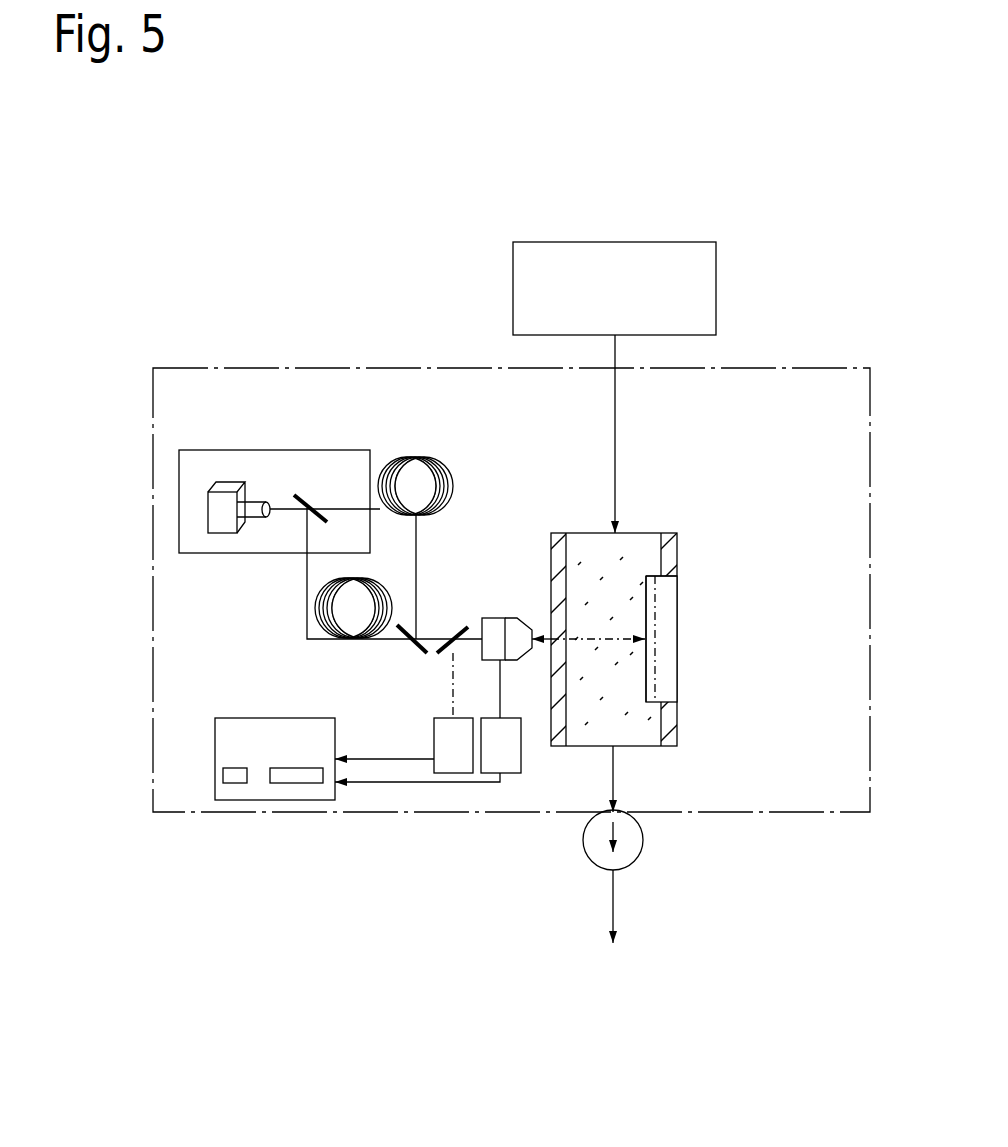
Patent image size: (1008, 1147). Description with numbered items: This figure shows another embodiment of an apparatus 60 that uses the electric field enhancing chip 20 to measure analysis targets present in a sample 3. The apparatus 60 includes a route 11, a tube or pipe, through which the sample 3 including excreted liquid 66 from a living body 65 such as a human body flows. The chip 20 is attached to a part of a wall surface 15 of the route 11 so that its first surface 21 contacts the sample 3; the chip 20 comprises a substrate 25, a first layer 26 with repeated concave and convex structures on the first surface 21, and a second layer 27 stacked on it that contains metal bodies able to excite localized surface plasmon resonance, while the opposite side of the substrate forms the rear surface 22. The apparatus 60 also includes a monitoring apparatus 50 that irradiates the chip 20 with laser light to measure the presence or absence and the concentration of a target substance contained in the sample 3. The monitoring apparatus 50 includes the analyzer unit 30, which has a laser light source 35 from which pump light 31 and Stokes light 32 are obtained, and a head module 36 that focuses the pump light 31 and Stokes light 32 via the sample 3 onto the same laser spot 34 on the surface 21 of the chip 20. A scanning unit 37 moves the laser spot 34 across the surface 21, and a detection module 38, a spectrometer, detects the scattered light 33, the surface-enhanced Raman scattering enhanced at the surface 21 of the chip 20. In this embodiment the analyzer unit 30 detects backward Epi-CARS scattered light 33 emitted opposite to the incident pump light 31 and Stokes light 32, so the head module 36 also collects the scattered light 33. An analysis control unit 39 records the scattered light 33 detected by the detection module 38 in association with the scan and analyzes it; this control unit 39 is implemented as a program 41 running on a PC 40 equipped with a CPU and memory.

The sample 3 is at (624, 687).
The route 11 is at (717, 678).
The wall surface 15 is at (668, 739).
The electric field enhancing chip 20 is at (657, 576).
The first surface 21 is at (600, 630).
The rear surface 22 is at (677, 680).
The substrate 25 is at (680, 572).
The first layer 26 is at (657, 573).
The second layer 27 is at (638, 593).
The analyzer unit 30 is at (497, 478).
The pump light 31 is at (417, 610).
The Stokes light 32 is at (383, 642).
The scattered light 33 is at (452, 668).
The laser spot 34 is at (640, 632).
The laser light source 35 is at (343, 470).
The head module 36 is at (490, 625).
The scanning unit 37 is at (512, 765).
The detection module 38 is at (440, 748).
The analysis control unit 39 is at (302, 777).
The PC 40 is at (259, 765).
The program 41 is at (235, 783).
The monitoring apparatus 50 is at (180, 375).
The apparatus 60 is at (358, 277).
The living body 65 is at (533, 255).
The excreted liquid 66 is at (615, 353).